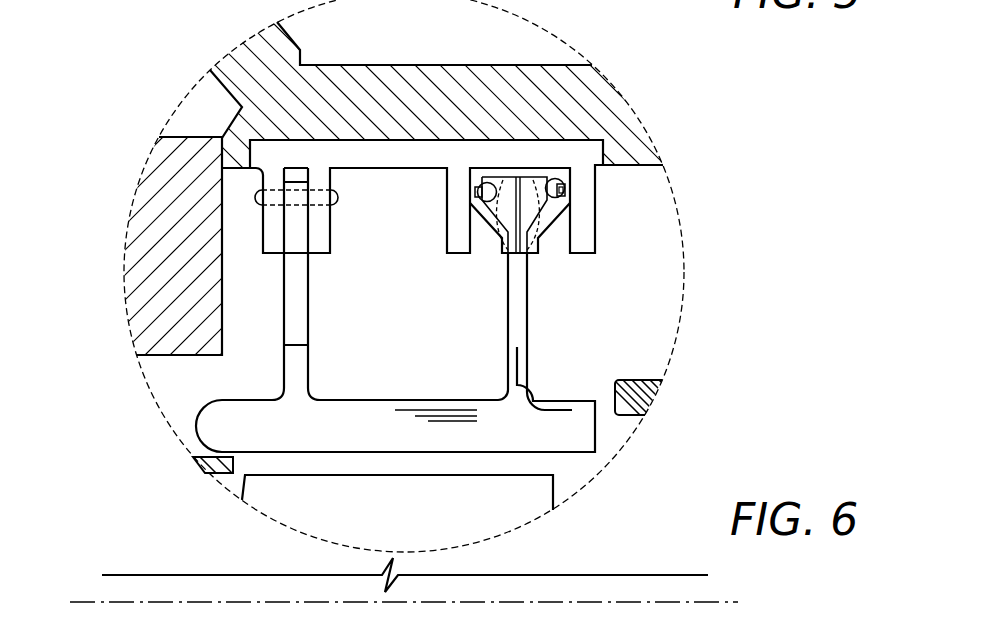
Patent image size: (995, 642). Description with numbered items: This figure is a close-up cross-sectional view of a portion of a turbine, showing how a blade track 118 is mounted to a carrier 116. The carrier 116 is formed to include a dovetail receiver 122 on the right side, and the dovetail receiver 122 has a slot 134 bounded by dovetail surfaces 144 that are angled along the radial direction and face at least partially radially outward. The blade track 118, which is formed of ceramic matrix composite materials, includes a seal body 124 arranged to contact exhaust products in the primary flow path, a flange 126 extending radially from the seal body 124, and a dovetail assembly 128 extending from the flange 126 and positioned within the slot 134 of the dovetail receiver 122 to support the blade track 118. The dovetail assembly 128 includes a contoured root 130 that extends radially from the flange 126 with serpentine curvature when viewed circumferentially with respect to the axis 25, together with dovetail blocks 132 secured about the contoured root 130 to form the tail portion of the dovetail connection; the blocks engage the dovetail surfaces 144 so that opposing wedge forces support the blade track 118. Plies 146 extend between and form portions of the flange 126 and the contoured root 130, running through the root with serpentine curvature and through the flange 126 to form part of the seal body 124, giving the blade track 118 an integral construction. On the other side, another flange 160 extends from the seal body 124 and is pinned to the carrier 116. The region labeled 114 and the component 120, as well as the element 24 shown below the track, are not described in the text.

The housing upper wall 114 is at (610, 73).
The carrier 116 is at (403, 143).
The blade track 118 is at (640, 273).
The recess 120 is at (632, 203).
The dovetail receiver 122 is at (467, 182).
The seal body 124 is at (348, 434).
The flange 126 is at (513, 312).
The dovetail assembly 128 is at (487, 221).
The contoured root 130 is at (627, 110).
The dovetail blocks 132 is at (532, 167).
The slot 134 is at (498, 258).
The dovetail surfaces 144 is at (496, 196).
The plies 146 is at (523, 380).
The flange 160 is at (283, 332).
The plate 24 is at (520, 490).
The axis 25 is at (83, 602).